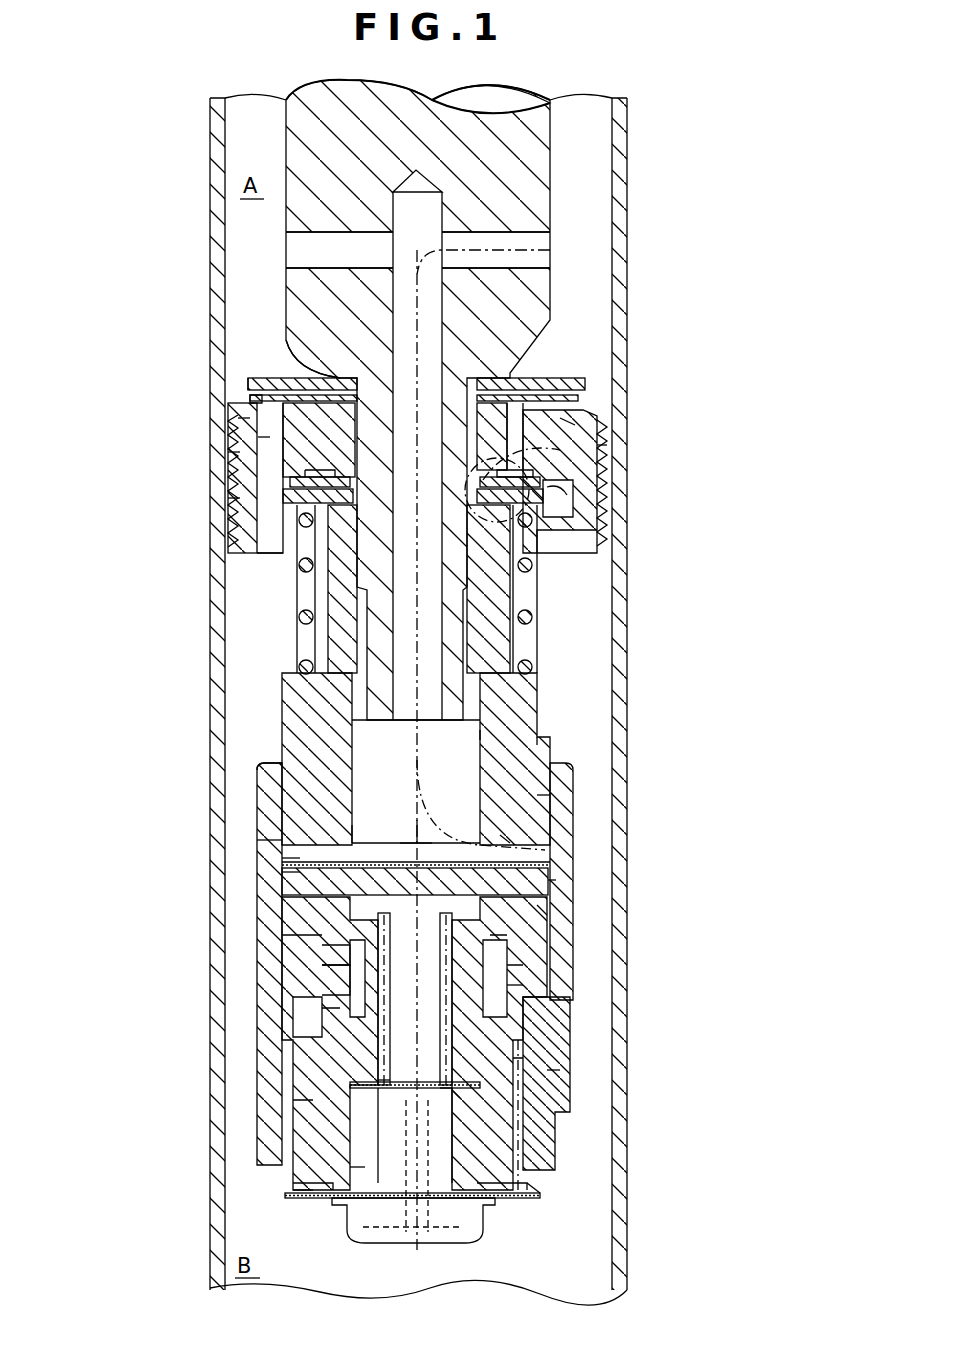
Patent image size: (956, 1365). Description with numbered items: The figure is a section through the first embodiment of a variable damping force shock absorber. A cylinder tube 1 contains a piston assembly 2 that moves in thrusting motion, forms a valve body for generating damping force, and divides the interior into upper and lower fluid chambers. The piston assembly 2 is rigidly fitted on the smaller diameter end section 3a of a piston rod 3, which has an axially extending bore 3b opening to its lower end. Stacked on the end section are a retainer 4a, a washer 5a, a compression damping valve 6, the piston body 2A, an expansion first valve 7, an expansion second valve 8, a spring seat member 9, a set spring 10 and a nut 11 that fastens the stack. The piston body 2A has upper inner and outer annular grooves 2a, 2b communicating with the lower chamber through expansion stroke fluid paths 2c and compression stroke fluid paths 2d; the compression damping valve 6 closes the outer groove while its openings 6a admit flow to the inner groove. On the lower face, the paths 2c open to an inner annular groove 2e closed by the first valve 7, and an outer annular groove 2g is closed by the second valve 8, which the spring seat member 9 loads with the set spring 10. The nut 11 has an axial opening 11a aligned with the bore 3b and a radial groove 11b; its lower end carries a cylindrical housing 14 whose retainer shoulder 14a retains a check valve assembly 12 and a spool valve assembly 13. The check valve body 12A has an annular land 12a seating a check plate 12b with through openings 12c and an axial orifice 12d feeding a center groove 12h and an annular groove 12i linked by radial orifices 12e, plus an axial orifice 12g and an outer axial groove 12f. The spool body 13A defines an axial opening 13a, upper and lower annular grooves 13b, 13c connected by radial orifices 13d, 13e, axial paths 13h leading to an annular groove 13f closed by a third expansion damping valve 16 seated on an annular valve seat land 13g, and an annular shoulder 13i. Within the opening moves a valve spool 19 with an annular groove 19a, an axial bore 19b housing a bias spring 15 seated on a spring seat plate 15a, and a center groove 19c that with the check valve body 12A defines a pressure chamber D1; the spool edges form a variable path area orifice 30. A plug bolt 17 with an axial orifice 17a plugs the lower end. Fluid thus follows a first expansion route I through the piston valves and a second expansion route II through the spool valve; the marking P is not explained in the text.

The cylinder tube 1 is at (620, 175).
The piston assembly 2 is at (597, 410).
The inner annular groove 2a is at (565, 420).
The outer annular groove 2b is at (248, 388).
The expansion stroke fluid path 2c is at (605, 450).
The compression stroke fluid path 2d is at (265, 437).
The inner annular groove 2e is at (235, 452).
The outer annular groove 2g is at (235, 495).
The piston body 2A is at (240, 418).
The piston rod 3 is at (290, 140).
The smaller diameter end section 3a is at (275, 553).
The axially extending bore 3b is at (405, 248).
The retainer 4a is at (250, 382).
The washer 5a is at (330, 350).
The compression damping valve 6 is at (255, 398).
The openings 6a is at (510, 380).
The expansion first valve 7 is at (290, 480).
The expansion second valve 8 is at (285, 497).
The spring seat member 9 is at (550, 520).
The set spring 10 is at (535, 570).
The nut 11 is at (290, 693).
The axial opening 11a is at (477, 732).
The radial groove 11b is at (530, 800).
The check valve assembly 12 is at (282, 887).
The annular land 12a is at (545, 770).
The check plate 12b is at (385, 860).
The through openings 12c is at (320, 865).
The axial orifice 12d is at (412, 860).
The radial orifices 12e is at (290, 855).
The axial groove 12f is at (550, 880).
The axial orifice 12g is at (283, 858).
The center groove 12h is at (420, 895).
The annular groove 12i is at (505, 835).
The check valve body 12A is at (548, 860).
The spool valve assembly 13 is at (313, 1137).
The axial opening 13a is at (350, 1085).
The upper annular groove 13b is at (540, 912).
The lower annular groove 13c is at (510, 985).
The radial orifice 13d is at (320, 938).
The radial orifice 13e is at (320, 1008).
The annular groove 13f is at (313, 1200).
The annular valve seat land 13g is at (542, 1198).
The axial paths 13h is at (313, 1095).
The annular shoulder 13i is at (452, 1092).
The spool body 13A is at (360, 1167).
The cylindrical housing 14 is at (535, 1010).
The retainer shoulder 14a is at (547, 1072).
The bias spring 15 is at (415, 1068).
The spring seat plate 15a is at (450, 1092).
The third expansion damping valve 16 is at (313, 1195).
The plug bolt 17 is at (467, 1222).
The axial orifice 17a is at (414, 1222).
The valve spool 19 is at (313, 1050).
The annular groove 19a is at (340, 975).
The axial bore 19b is at (378, 1082).
The center groove 19c is at (415, 1000).
The variable path area orifice 30 is at (330, 950).
The pressure chamber D1 is at (290, 872).
The first expansion stroke fluid flow route I is at (630, 468).
The second expansion stroke fluid flow route II is at (570, 1132).
The pressure chamber P is at (547, 527).